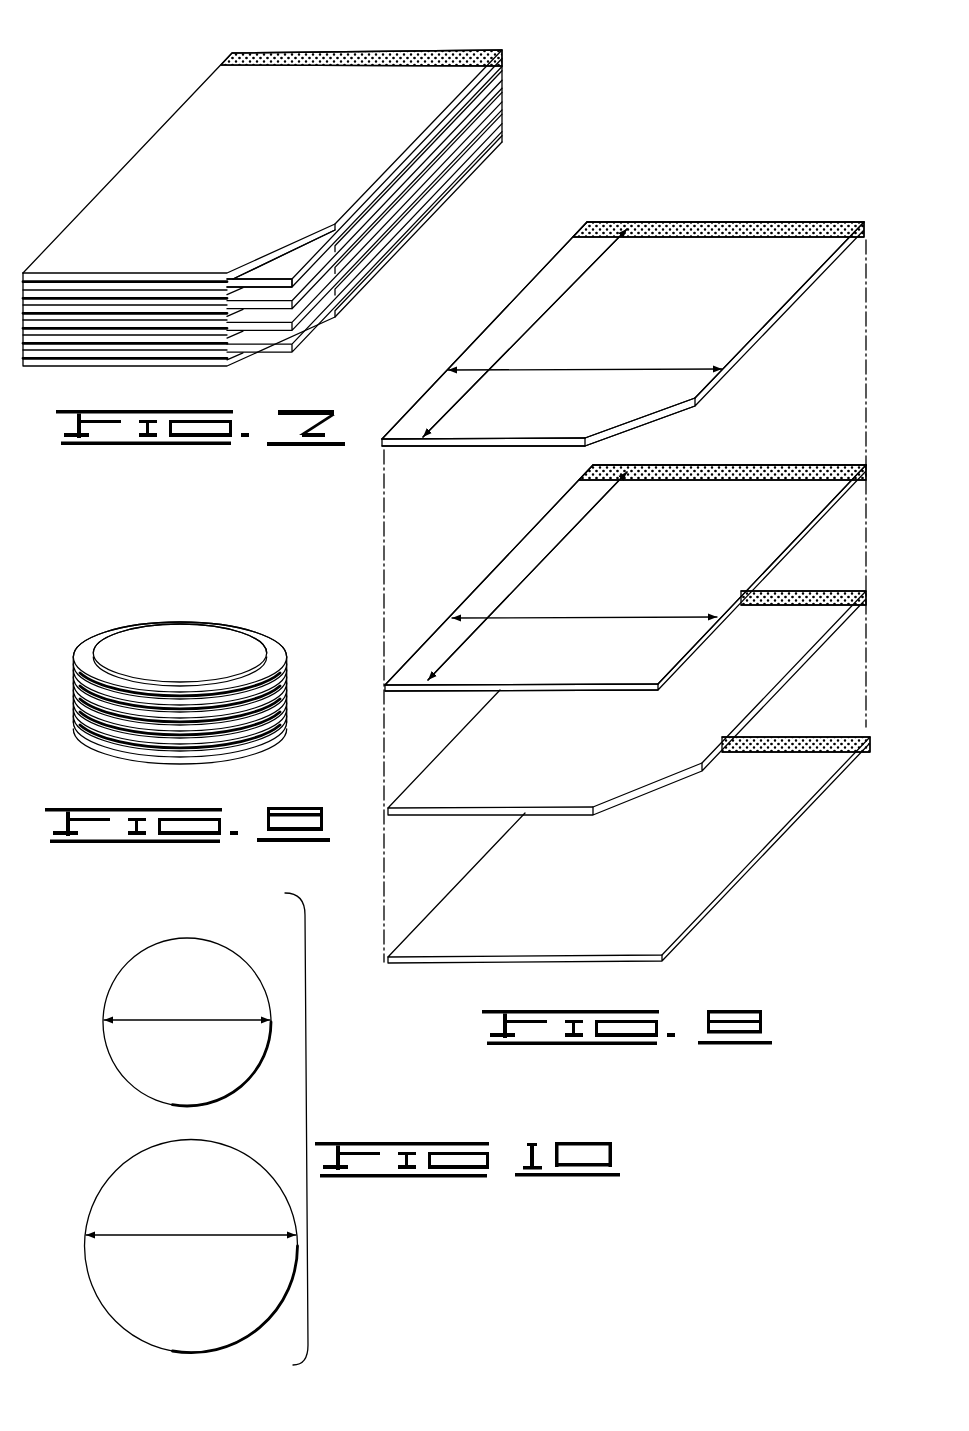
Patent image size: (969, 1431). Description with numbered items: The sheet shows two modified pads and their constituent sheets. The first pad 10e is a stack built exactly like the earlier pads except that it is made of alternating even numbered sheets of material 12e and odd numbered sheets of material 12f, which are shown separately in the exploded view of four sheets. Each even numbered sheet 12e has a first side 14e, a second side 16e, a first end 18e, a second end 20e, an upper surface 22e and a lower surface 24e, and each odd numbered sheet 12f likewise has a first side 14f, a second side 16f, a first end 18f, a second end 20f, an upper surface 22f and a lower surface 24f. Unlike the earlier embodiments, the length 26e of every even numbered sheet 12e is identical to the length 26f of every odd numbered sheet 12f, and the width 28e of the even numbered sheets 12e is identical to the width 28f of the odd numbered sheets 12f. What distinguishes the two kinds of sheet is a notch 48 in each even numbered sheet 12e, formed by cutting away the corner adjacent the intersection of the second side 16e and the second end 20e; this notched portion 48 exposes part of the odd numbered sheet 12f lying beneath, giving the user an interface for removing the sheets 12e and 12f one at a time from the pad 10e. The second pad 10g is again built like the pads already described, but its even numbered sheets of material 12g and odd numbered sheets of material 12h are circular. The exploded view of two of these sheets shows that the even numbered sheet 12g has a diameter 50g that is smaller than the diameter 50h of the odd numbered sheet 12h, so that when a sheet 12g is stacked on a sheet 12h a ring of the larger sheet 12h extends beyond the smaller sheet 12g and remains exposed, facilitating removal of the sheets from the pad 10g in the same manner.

In FIG. 7, the modified pad 10e is at (430, 41).
In FIG. 7, the even numbered sheet of material 12e is at (418, 118).
In FIG. 9, the even numbered sheet of material 12e is at (767, 287).
In FIG. 7, the odd numbered sheet of material 12f is at (288, 262).
In FIG. 9, the odd numbered sheet of material 12f is at (750, 557).
In FIG. 9, the first side 14e is at (515, 297).
In FIG. 9, the second side 16e is at (775, 321).
In FIG. 9, the first end 18e is at (680, 220).
In FIG. 9, the second end 20e is at (477, 446).
In FIG. 9, the upper surface 22e is at (433, 405).
In FIG. 9, the lower surface 24e is at (548, 446).
In FIG. 9, the length 26e is at (572, 285).
In FIG. 9, the width 28e is at (572, 368).
In FIG. 9, the notch 48 is at (640, 417).
In FIG. 9, the first end 18f is at (727, 463).
In FIG. 9, the first side 14f is at (513, 553).
In FIG. 9, the second side 16f is at (693, 650).
In FIG. 9, the second end 20f is at (477, 693).
In FIG. 9, the upper surface 22f is at (423, 648).
In FIG. 9, the lower surface 24f is at (523, 693).
In FIG. 9, the length 26f is at (555, 552).
In FIG. 9, the width 28f is at (585, 616).
In FIG. 8, the modified pad 10g is at (174, 604).
In FIG. 8, the even numbered sheet of material 12g is at (197, 645).
In FIG. 10, the even numbered sheet of material 12g is at (208, 952).
In FIG. 8, the odd numbered sheet of material 12h is at (257, 717).
In FIG. 10, the odd numbered sheet of material 12h is at (220, 1163).
In FIG. 10, the diameter 50g is at (158, 1018).
In FIG. 10, the diameter 50h is at (168, 1233).